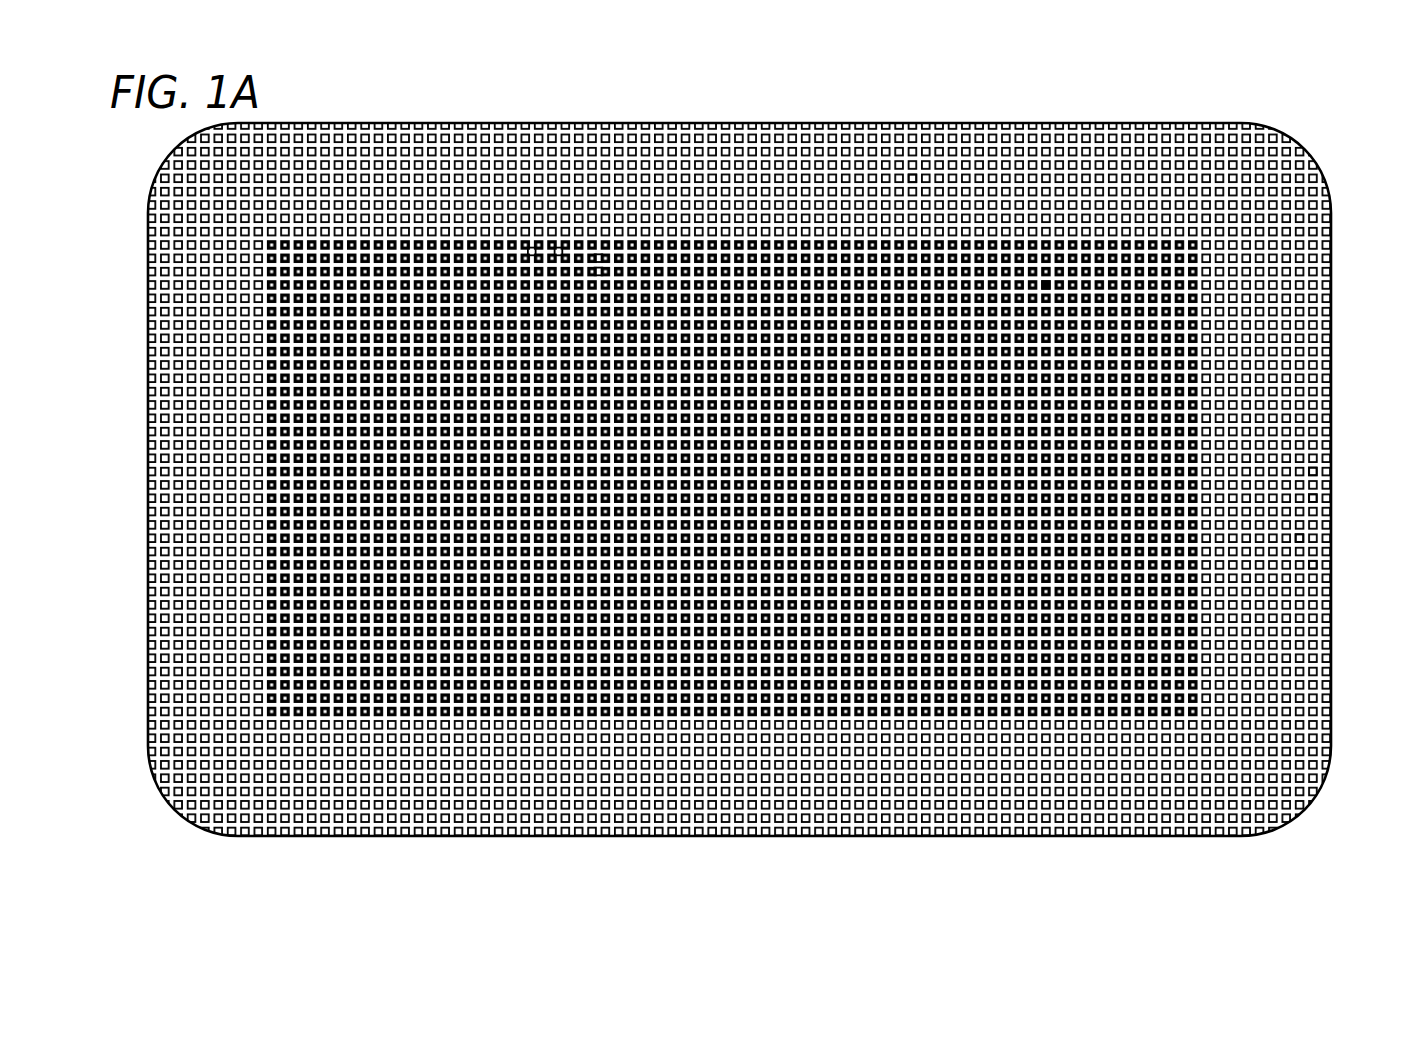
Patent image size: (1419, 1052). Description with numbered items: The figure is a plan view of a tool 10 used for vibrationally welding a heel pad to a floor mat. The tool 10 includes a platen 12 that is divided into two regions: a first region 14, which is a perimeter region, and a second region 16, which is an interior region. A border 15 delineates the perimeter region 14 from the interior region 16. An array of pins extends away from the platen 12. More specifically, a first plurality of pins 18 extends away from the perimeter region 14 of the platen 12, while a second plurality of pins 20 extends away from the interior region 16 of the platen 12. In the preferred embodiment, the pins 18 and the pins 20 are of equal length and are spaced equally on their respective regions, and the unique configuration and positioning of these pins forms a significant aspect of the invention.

The tool 10 is at (777, 490).
The platen 12 is at (1331, 340).
The first region 14 is at (920, 170).
The border 15 is at (452, 718).
The second region 16 is at (1058, 268).
The first plurality of pins 18 is at (1316, 470).
The second plurality of pins 20 is at (602, 272).